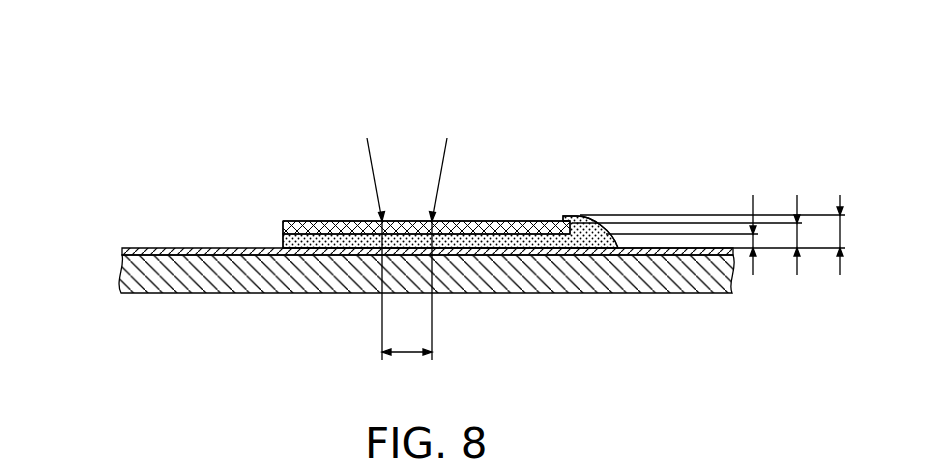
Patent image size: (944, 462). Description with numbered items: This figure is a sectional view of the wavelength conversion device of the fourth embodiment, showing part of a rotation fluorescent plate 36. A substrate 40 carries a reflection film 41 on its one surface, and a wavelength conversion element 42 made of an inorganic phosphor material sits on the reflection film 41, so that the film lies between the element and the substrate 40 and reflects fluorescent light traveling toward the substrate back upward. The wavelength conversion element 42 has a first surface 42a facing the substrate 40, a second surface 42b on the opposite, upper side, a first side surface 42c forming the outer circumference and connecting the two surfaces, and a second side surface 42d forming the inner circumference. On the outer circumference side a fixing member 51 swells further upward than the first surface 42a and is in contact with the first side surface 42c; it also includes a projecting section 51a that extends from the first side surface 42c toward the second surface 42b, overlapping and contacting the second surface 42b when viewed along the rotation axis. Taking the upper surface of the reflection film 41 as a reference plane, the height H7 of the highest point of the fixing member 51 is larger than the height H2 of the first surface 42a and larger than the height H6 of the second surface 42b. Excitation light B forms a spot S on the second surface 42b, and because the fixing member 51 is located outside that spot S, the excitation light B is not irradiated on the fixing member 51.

The rotation fluorescent plate 36 is at (379, 128).
The substrate 40 is at (543, 283).
The reflection film 41 is at (480, 256).
The wavelength conversion element 42 is at (502, 221).
The first surface 42a is at (331, 243).
The second surface 42b is at (535, 221).
The first side surface 42c is at (582, 216).
The second side surface 42d is at (283, 221).
The fixing member 51 is at (309, 243).
The projecting section 51a is at (563, 217).
The excitation light B is at (447, 146).
The spot S is at (407, 290).
The height H2 is at (725, 223).
The height H6 is at (694, 221).
The height H7 is at (718, 221).